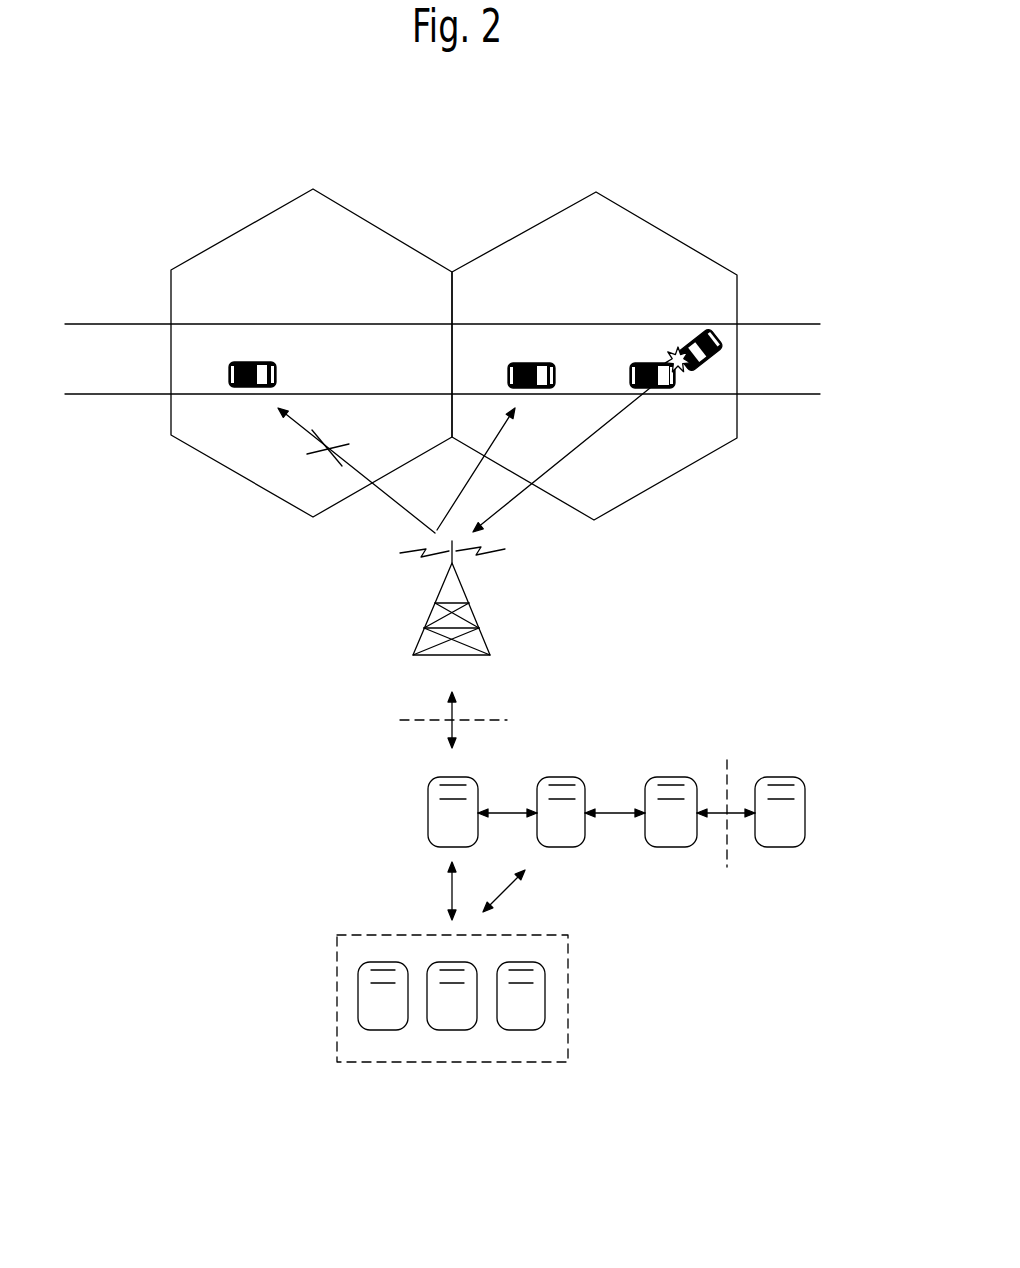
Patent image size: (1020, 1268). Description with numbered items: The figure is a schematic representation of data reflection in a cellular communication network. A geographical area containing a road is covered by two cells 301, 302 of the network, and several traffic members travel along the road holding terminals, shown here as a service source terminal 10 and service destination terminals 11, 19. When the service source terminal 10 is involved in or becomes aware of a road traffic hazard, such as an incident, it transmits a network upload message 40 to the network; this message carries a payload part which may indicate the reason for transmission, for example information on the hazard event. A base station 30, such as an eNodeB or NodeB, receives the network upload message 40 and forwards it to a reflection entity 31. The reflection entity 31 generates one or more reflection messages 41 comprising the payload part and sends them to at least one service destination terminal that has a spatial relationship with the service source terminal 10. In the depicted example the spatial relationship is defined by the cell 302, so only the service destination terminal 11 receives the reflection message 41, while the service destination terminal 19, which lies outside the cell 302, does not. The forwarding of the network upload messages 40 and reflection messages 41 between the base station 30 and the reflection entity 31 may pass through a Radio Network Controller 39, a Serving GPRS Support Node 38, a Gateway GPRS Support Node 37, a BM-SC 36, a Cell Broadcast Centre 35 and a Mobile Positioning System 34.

The cell 301 is at (242, 227).
The cell 302 is at (475, 255).
The service source terminal 10 is at (650, 363).
The service destination terminal 11 is at (527, 363).
The service destination terminal 19 is at (255, 388).
The base station 30 is at (423, 633).
The reflection entity 31 is at (780, 847).
The Mobile Positioning System 34 is at (520, 1030).
The Cell Broadcast Centre 35 is at (452, 1030).
The BM-SC 36 is at (383, 1030).
The Gateway GPRS Support Node 37 is at (670, 847).
The Serving GPRS Support Node 38 is at (558, 847).
The Radio Network Controller 39 is at (428, 813).
The network upload message 40 is at (592, 442).
The reflection message 41 is at (468, 486).